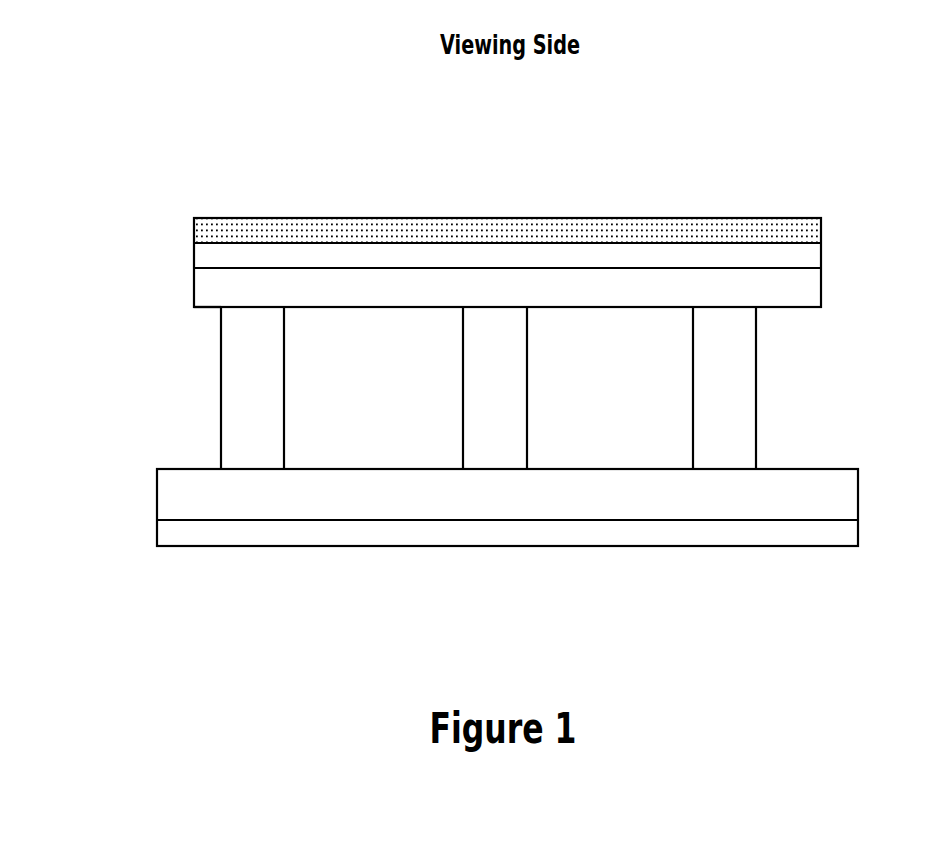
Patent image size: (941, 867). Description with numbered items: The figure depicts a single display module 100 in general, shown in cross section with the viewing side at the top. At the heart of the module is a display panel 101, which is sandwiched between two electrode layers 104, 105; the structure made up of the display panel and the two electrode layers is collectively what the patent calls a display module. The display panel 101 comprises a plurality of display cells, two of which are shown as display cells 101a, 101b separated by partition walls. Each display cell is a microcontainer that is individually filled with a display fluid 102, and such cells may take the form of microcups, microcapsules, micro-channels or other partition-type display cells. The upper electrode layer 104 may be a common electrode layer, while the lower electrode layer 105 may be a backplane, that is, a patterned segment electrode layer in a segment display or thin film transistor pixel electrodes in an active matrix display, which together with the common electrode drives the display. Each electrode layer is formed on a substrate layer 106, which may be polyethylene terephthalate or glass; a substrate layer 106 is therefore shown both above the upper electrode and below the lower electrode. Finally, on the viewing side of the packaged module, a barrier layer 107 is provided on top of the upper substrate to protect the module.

The display module 100 is at (812, 388).
The display panel 101 is at (206, 370).
The display cell 101a is at (373, 388).
The display cell 101b is at (610, 388).
The display fluid 102 is at (311, 421).
The electrode layer 104 is at (757, 278).
The electrode layer 105 is at (619, 478).
The substrate layer 106 is at (501, 253).
The barrier layer 107 is at (322, 216).